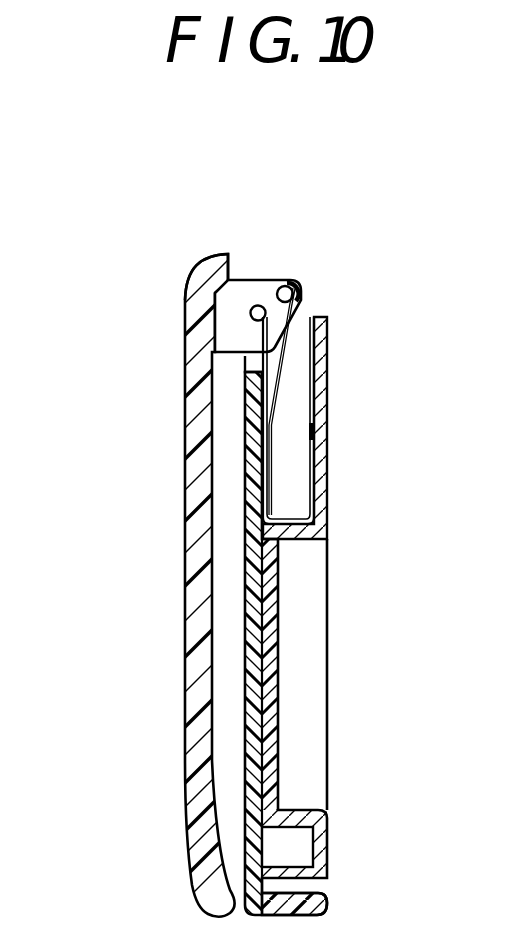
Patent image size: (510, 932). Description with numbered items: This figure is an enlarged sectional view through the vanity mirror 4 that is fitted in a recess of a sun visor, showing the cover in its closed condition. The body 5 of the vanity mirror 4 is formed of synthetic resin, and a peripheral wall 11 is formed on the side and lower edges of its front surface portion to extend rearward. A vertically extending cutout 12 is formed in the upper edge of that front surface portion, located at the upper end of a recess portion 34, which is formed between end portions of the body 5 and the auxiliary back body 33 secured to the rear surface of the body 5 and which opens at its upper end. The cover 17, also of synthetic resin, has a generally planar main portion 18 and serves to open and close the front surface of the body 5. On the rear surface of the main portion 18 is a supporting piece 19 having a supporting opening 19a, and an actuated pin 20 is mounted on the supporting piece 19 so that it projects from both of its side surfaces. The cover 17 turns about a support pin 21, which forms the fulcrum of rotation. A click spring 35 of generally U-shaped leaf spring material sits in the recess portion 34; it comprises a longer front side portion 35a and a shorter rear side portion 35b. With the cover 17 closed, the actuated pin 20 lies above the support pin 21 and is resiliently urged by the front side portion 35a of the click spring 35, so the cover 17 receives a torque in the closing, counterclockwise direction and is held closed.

The vanity mirror 4 is at (99, 162).
The body 5 is at (250, 801).
The peripheral wall 11 is at (330, 907).
The cutout 12 is at (248, 357).
The cover 17 is at (185, 490).
The main portion 18 is at (187, 303).
The supporting piece 19 is at (253, 280).
The supporting opening 19a is at (251, 315).
The actuated pin 20 is at (302, 284).
The support pin 21 is at (266, 298).
The auxiliary back body 33 is at (328, 521).
The recess portion 34 is at (305, 373).
The click spring 35 is at (268, 412).
The front side portion 35a is at (305, 289).
The rear side portion 35b is at (303, 450).